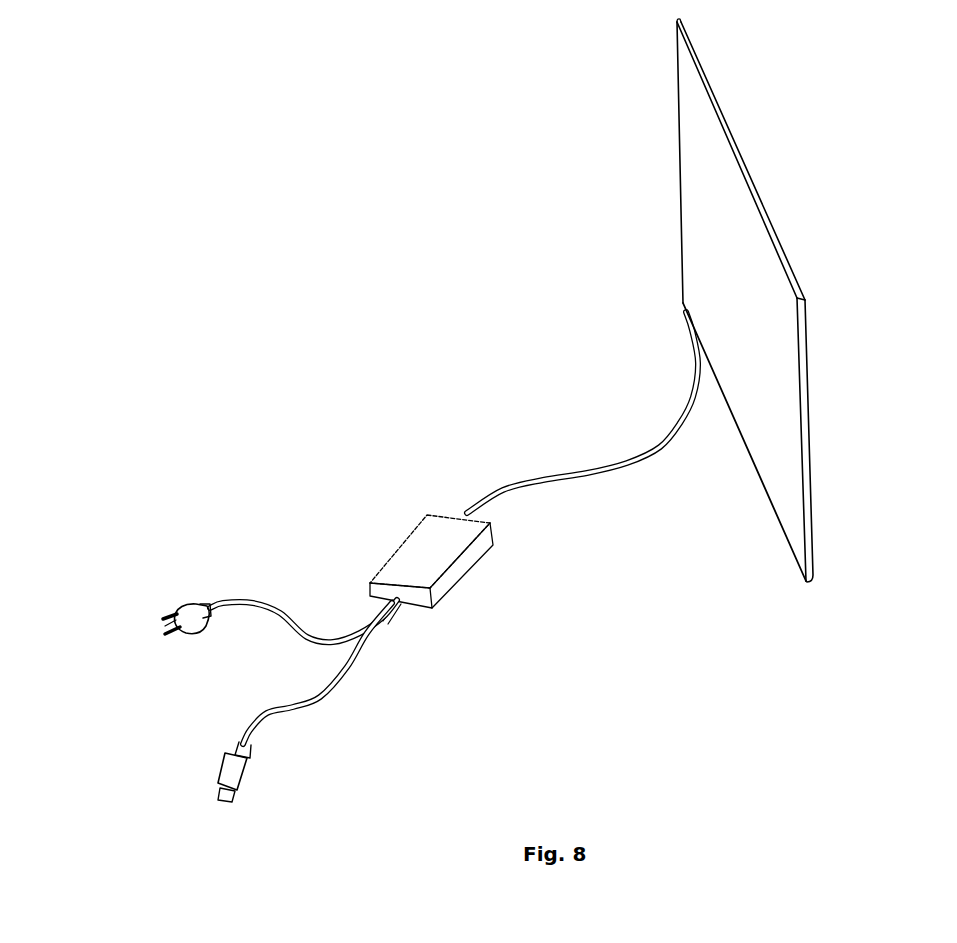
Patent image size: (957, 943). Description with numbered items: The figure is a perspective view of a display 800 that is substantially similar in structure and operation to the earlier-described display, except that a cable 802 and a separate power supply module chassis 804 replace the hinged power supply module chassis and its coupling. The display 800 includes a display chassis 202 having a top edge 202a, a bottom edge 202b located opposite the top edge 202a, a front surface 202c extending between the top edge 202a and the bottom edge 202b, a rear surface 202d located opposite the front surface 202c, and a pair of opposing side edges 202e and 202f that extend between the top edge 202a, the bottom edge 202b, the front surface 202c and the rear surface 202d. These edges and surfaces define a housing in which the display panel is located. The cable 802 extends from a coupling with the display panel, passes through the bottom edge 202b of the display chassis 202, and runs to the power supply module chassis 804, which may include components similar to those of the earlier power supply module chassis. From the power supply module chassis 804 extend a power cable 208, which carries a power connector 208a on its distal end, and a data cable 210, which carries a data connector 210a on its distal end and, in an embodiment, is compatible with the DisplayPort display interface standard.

The display 800 is at (312, 233).
The display chassis 202 is at (812, 583).
The top edge 202a is at (738, 147).
The bottom edge 202b is at (780, 528).
The front surface 202c is at (780, 242).
The rear surface 202d is at (715, 243).
The side edge 202e is at (678, 140).
The side edge 202f is at (803, 408).
The cable 802 is at (580, 473).
The power supply module chassis 804 is at (420, 553).
The power cable 208 is at (292, 618).
The power connector 208a is at (177, 608).
The data cable 210 is at (323, 698).
The data connector 210a is at (237, 777).